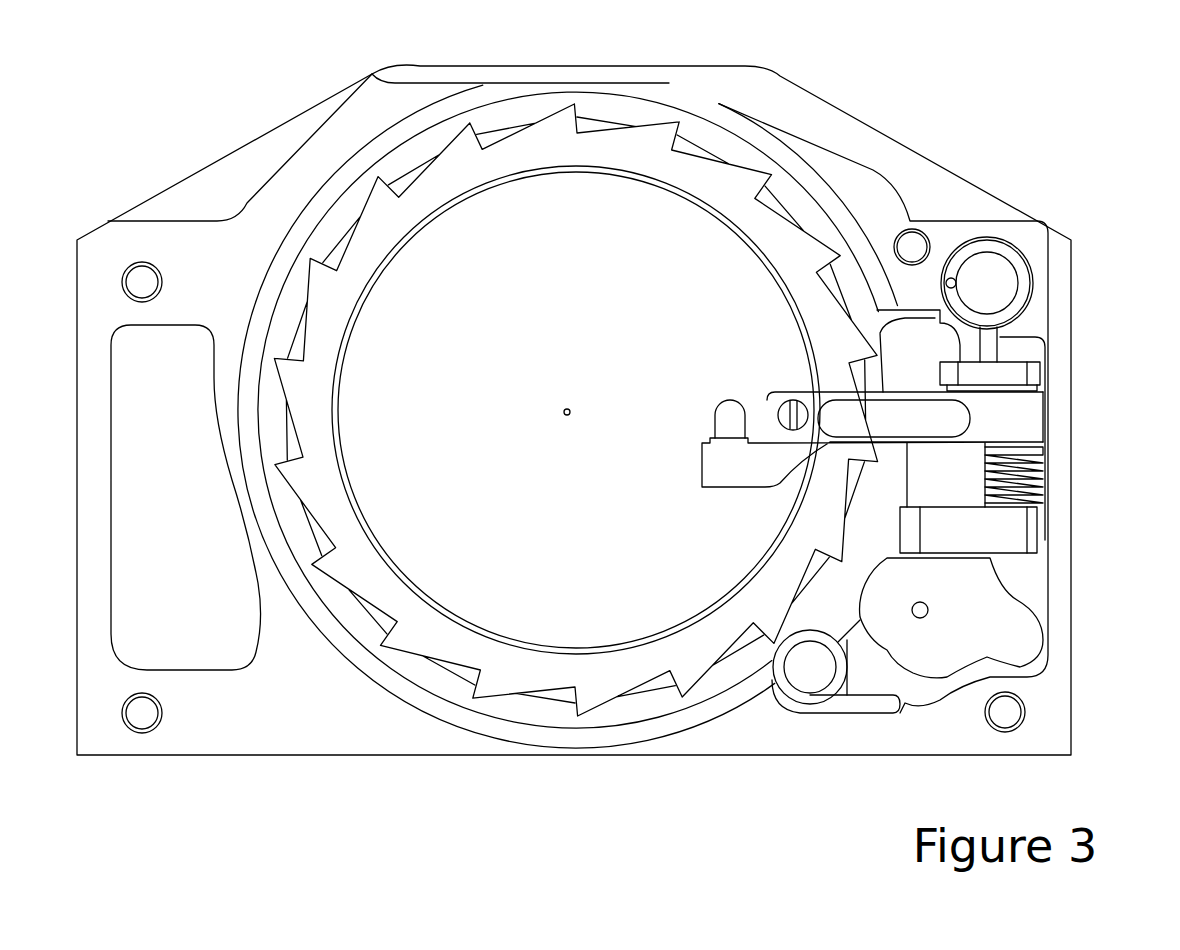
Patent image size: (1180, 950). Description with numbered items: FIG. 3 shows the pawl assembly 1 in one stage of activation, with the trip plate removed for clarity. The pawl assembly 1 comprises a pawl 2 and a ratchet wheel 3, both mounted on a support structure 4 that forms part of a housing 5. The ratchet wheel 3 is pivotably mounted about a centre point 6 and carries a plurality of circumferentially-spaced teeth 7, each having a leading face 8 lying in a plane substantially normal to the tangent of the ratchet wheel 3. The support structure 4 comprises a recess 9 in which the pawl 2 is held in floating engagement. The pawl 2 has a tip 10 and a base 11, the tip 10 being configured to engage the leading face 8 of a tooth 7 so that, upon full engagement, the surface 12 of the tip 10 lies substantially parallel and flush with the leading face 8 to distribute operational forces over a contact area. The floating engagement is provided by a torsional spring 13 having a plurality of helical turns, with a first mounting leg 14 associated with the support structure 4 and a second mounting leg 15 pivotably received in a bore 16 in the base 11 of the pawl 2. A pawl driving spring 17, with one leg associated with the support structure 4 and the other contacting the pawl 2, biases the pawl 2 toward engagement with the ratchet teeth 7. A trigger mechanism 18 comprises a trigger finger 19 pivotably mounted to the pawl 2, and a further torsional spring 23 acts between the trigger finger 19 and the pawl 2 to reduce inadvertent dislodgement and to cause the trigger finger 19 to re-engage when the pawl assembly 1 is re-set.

The pawl assembly 1 is at (1012, 120).
The pawl 2 is at (957, 475).
The ratchet wheel 3 is at (552, 142).
The support structure 4 is at (1047, 688).
The housing 5 is at (275, 782).
The centre point 6 is at (566, 408).
The teeth 7 is at (662, 132).
The leading face 8 is at (677, 133).
The recess 9 is at (953, 682).
The tip 10 is at (940, 352).
The base 11 is at (973, 568).
The surface 12 is at (905, 335).
The torsional spring 13 is at (822, 703).
The first mounting leg 14 is at (885, 707).
The second mounting leg 15 is at (847, 628).
The bore 16 is at (935, 610).
The pawl driving spring 17 is at (1033, 281).
The trigger mechanism 18 is at (1038, 415).
The trigger finger 19 is at (1000, 425).
The torsional spring 23 is at (1032, 490).